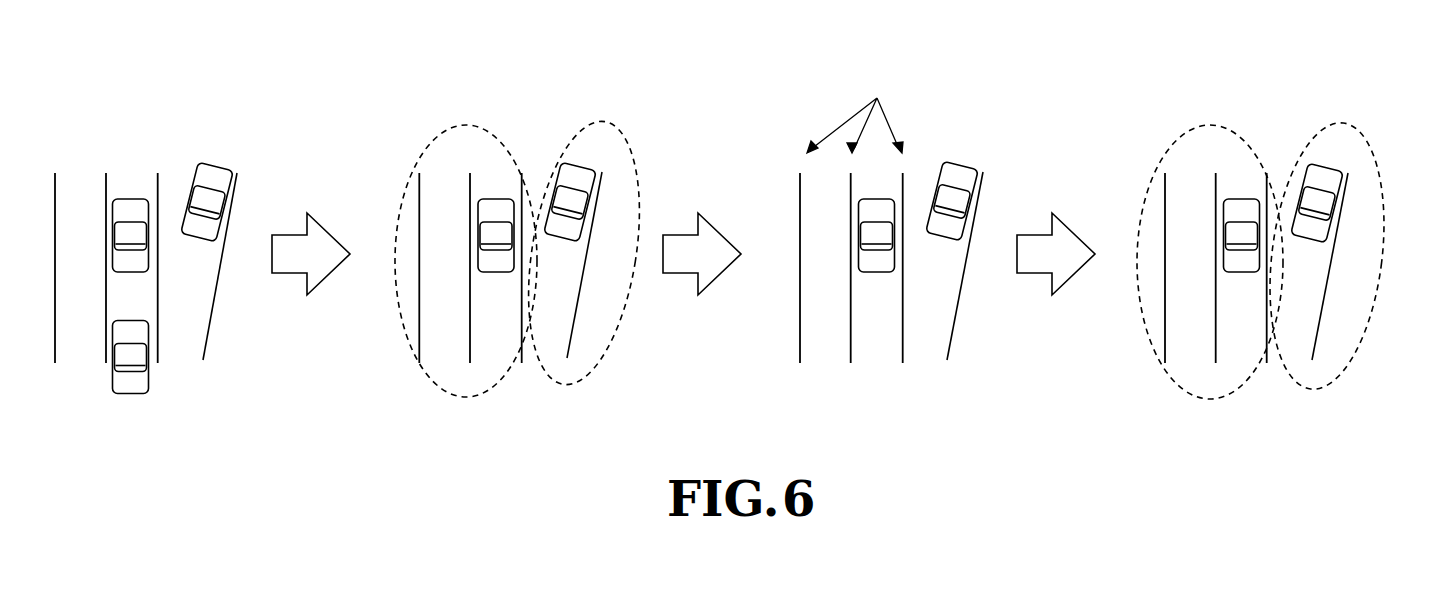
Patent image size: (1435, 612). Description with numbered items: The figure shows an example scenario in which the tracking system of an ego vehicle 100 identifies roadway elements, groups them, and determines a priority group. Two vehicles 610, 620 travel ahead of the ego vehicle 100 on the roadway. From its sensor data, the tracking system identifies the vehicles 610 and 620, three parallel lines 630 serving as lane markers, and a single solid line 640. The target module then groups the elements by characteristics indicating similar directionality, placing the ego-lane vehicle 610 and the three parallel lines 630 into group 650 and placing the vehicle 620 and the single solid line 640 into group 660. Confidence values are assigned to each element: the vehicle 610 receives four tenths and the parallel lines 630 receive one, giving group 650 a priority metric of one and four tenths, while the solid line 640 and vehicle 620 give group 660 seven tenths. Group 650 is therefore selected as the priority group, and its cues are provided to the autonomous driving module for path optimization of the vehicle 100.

The ego vehicle 100 is at (150, 373).
The vehicle 610 is at (113, 243).
The vehicle 620 is at (218, 169).
The three parallel lines 630 is at (877, 98).
The single solid line 640 is at (950, 355).
The group 650 is at (1218, 128).
The group 660 is at (1347, 123).